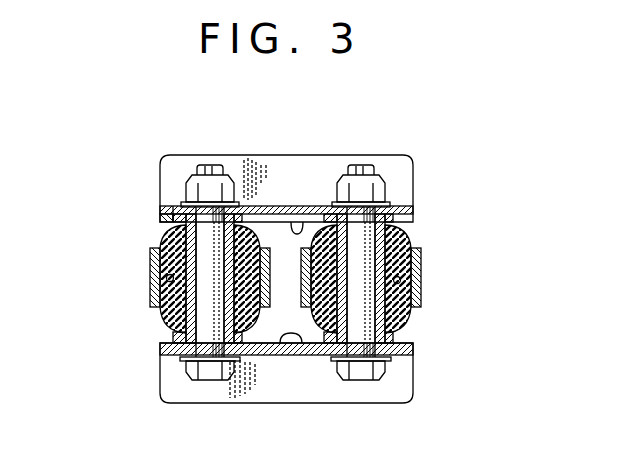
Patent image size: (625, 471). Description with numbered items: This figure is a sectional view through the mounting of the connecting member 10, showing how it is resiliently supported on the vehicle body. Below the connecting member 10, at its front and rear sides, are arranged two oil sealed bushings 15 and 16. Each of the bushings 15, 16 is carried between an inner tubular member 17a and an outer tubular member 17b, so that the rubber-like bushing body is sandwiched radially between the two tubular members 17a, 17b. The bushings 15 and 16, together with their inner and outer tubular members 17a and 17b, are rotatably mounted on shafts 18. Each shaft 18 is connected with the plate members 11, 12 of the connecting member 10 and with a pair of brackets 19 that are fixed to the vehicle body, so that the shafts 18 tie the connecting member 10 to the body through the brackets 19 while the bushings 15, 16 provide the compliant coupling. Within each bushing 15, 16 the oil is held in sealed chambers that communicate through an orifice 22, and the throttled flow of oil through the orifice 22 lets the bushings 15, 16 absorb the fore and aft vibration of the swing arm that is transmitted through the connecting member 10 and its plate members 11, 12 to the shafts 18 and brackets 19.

The connecting member 10 is at (410, 322).
The plate member 11 is at (298, 345).
The plate member 12 is at (310, 233).
The oil sealed bushing 15 is at (176, 252).
The oil sealed bushing 16 is at (392, 250).
The inner tubular member 17a is at (152, 298).
The outer tubular member 17b is at (182, 240).
The shaft 18 is at (172, 333).
The bracket 19 is at (279, 206).
The orifice 22 is at (166, 277).